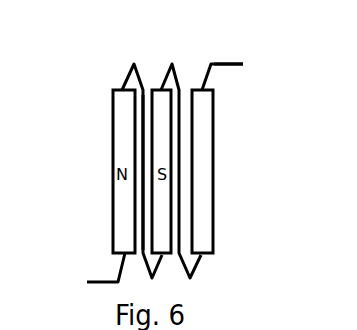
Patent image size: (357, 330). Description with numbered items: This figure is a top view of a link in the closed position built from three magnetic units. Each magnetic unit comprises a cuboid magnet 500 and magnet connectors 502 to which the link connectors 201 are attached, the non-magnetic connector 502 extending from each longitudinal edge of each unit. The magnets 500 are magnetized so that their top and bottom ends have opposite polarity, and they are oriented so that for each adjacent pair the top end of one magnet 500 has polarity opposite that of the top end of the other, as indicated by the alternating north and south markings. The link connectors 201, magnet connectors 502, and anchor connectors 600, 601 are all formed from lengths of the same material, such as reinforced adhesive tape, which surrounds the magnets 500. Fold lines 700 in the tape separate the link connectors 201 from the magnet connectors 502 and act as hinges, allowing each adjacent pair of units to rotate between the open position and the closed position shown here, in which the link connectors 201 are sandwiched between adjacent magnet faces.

The fold lines 700 is at (172, 55).
The link connectors 201 is at (145, 123).
The magnet 500 is at (213, 193).
The magnet connectors 502 is at (209, 77).
The anchor connector 600 is at (234, 57).
The anchor connector 601 is at (105, 280).